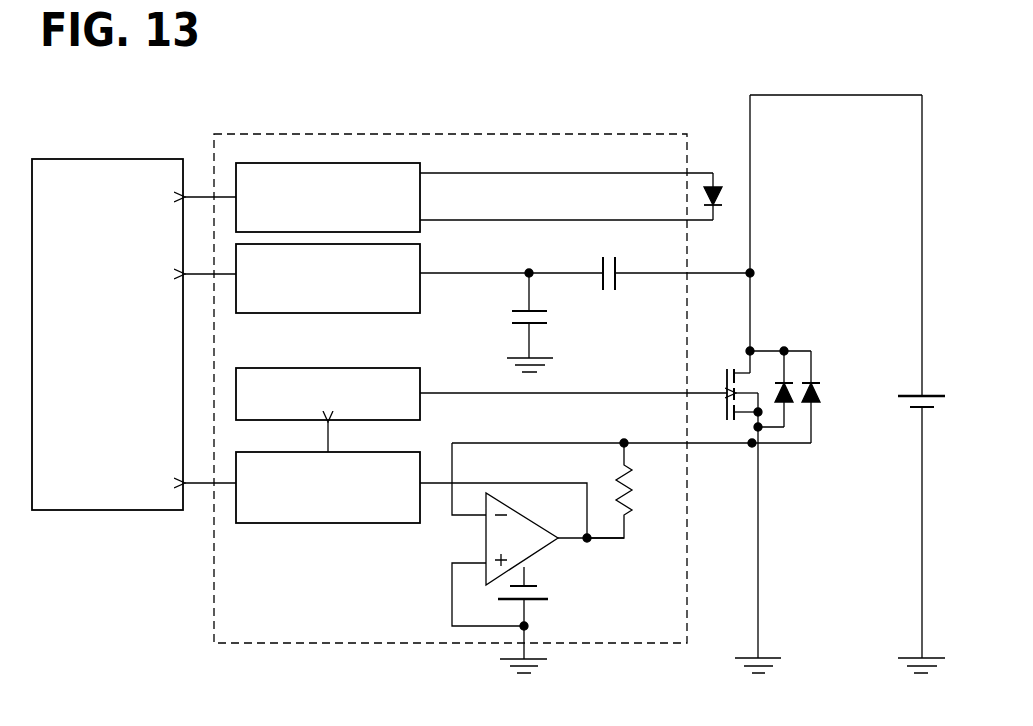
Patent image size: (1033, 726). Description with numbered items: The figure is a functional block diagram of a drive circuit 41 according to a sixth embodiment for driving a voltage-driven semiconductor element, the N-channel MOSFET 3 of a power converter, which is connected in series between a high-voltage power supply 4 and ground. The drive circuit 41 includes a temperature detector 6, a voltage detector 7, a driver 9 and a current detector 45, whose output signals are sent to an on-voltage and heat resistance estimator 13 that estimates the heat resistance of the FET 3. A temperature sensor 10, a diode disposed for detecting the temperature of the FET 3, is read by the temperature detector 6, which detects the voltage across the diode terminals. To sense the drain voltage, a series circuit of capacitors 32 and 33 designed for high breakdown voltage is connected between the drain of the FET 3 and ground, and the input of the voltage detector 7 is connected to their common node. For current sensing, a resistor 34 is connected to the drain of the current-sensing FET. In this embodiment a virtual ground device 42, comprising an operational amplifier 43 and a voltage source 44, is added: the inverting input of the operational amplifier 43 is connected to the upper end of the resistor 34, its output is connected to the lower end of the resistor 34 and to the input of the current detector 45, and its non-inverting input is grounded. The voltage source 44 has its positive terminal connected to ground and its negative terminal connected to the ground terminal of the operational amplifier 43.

The on-voltage and heat resistance estimator 13 is at (143, 159).
The drive circuit 41 is at (430, 134).
The temperature detector 6 is at (422, 168).
The voltage detector 7 is at (422, 258).
The driver 9 is at (328, 368).
The current detector 45 is at (292, 523).
The temperature sensor 10 is at (714, 185).
The capacitor 32 is at (610, 256).
The capacitor 33 is at (506, 312).
The MOSFET 3 is at (825, 392).
The high-voltage power supply 4 is at (906, 394).
The resistor 34 is at (634, 495).
The virtual ground device 42 is at (491, 558).
The operational amplifier 43 is at (536, 519).
The voltage source 44 is at (553, 592).